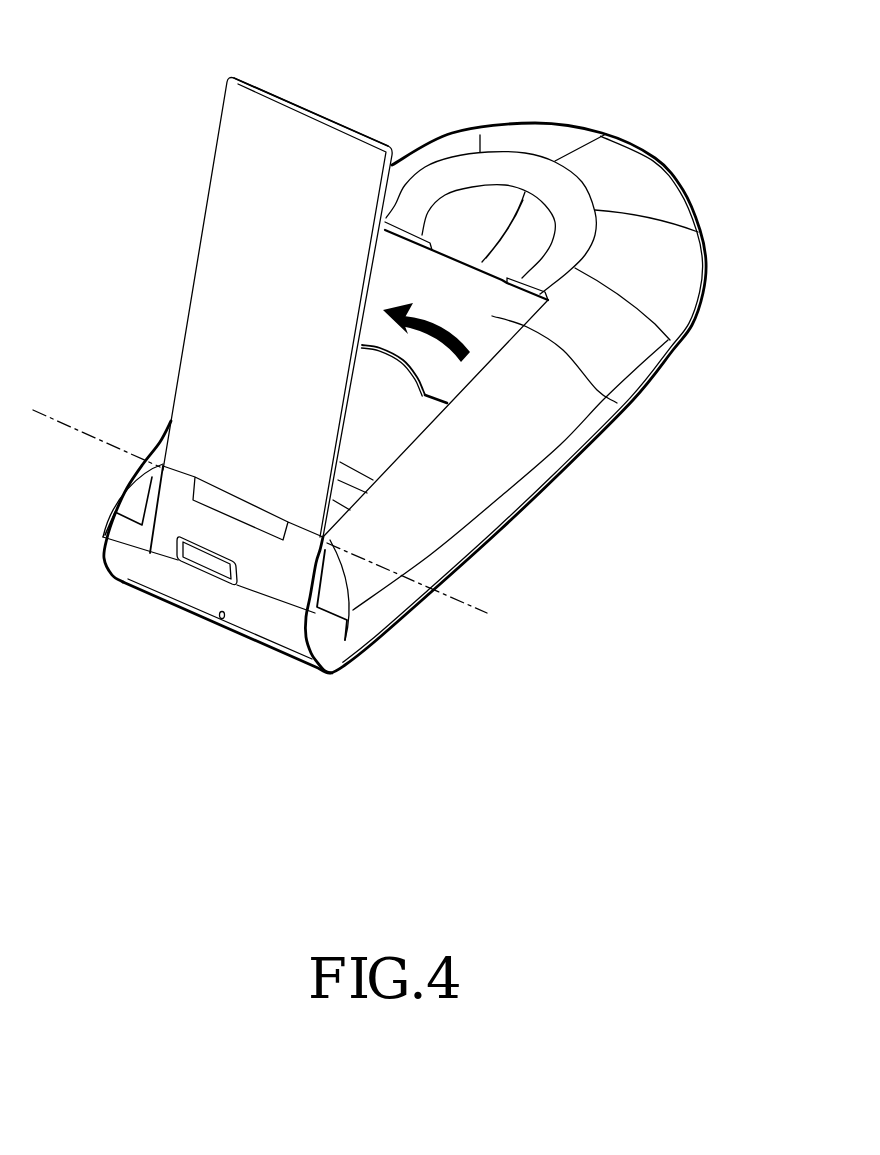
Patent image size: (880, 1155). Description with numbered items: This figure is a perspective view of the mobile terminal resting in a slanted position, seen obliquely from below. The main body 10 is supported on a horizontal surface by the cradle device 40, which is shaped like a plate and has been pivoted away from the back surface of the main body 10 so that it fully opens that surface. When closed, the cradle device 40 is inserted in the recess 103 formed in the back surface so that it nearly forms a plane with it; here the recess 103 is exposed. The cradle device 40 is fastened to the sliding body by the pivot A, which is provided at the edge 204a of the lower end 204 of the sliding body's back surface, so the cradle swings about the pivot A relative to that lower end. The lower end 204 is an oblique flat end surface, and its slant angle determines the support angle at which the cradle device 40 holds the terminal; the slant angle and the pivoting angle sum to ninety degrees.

The main body 10 is at (636, 134).
The cradle device 40 is at (220, 230).
The recess 103 is at (617, 403).
The lower end 204 is at (287, 600).
The edge 204a is at (163, 463).
The pivot A is at (470, 606).